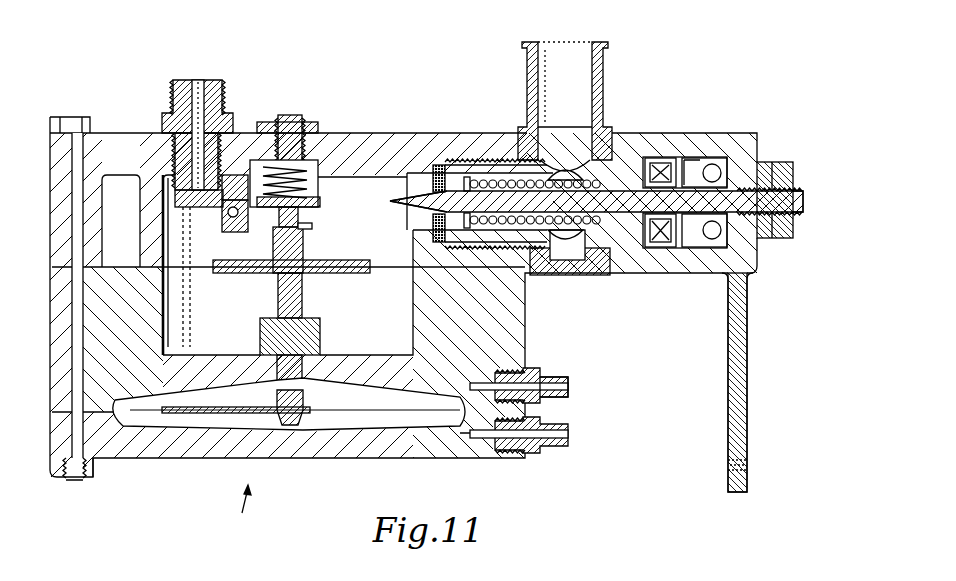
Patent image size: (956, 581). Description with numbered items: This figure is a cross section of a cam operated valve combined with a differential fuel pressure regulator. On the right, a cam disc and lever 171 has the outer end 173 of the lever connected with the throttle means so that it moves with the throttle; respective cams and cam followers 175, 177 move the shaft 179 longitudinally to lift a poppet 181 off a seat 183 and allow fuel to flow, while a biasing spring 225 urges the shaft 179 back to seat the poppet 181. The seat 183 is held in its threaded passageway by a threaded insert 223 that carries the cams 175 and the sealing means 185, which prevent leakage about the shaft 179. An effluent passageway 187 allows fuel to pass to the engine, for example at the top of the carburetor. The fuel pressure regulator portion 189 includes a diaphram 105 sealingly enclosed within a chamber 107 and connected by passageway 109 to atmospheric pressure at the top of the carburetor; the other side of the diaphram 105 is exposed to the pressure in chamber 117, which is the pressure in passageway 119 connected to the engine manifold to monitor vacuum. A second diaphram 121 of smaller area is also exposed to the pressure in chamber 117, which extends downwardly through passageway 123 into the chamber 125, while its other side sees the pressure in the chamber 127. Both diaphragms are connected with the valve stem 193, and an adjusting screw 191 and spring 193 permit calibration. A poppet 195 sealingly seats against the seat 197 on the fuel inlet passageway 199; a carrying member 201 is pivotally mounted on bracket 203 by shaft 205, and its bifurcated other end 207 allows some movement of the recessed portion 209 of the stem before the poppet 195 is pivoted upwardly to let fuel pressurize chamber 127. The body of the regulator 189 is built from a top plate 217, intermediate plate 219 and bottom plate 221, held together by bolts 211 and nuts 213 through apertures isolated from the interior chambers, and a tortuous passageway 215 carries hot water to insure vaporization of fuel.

The diaphram 105 is at (392, 413).
The chamber 107 is at (292, 430).
The passageway 109 is at (562, 448).
The chamber 117 is at (533, 364).
The passageway 119 is at (560, 400).
The second diaphram 121 is at (200, 278).
The passageway 123 is at (305, 395).
The chamber 125 is at (392, 313).
The chamber 127 is at (380, 208).
The cam disc and lever 171 is at (750, 278).
The outer end of the lever 173 is at (748, 465).
The cam 175 is at (712, 168).
The cam follower 177 is at (757, 150).
The shaft 179 is at (617, 200).
The poppet 181 is at (483, 178).
The seat 183 is at (440, 175).
The sealing means 185 is at (665, 162).
The effluent passageway 187 is at (563, 65).
The fuel pressure regulator portion 189 is at (257, 538).
The adjusting screw 191 is at (288, 120).
The spring 193 is at (320, 196).
The poppet 195 is at (185, 205).
The seat 197 is at (167, 190).
The fuel inlet passageway 199 is at (199, 98).
The carrying member 201 is at (228, 198).
The bracket 203 is at (232, 185).
The shaft 205 is at (237, 216).
The other end of the member 207 is at (316, 229).
The recessed portion 209 is at (303, 222).
The bolts 211 is at (72, 482).
The nuts 213 is at (95, 478).
The tortuous passageway 215 is at (122, 195).
The top plate 217 is at (93, 150).
The intermediate plate 219 is at (127, 340).
The bottom plate 221 is at (175, 443).
The threaded insert 223 is at (650, 265).
The biasing spring 225 is at (586, 279).